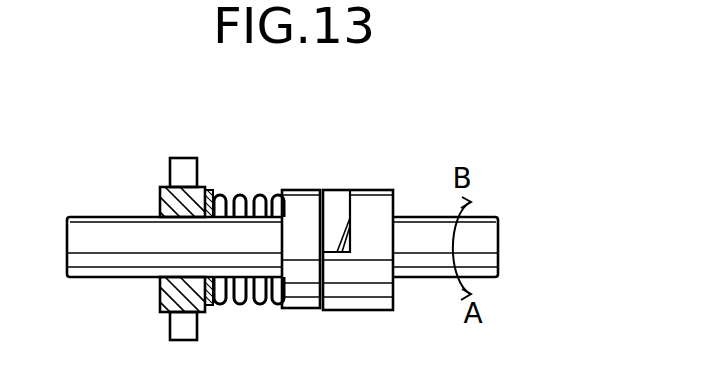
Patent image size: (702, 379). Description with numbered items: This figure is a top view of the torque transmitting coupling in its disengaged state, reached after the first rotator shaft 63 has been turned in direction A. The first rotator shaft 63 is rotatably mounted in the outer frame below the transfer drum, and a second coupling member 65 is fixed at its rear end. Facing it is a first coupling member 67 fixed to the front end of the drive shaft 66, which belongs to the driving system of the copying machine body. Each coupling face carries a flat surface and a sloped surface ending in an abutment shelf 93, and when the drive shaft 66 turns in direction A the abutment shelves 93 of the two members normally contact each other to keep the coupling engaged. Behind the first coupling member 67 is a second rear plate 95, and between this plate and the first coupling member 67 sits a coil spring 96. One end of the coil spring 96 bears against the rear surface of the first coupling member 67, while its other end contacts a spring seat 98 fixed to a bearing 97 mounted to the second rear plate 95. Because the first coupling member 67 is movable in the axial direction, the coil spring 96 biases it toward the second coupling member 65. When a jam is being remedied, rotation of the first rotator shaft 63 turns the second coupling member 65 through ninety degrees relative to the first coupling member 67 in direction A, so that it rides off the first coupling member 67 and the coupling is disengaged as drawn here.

The first rotator shaft 63 is at (489, 229).
The second coupling member 65 is at (378, 197).
The drive shaft 66 is at (115, 240).
The first coupling member 67 is at (300, 197).
The abutment shelf 93 is at (333, 198).
The second rear plate 95 is at (180, 177).
The coil spring 96 is at (243, 193).
The bearing 97 is at (158, 190).
The spring seat 98 is at (210, 313).